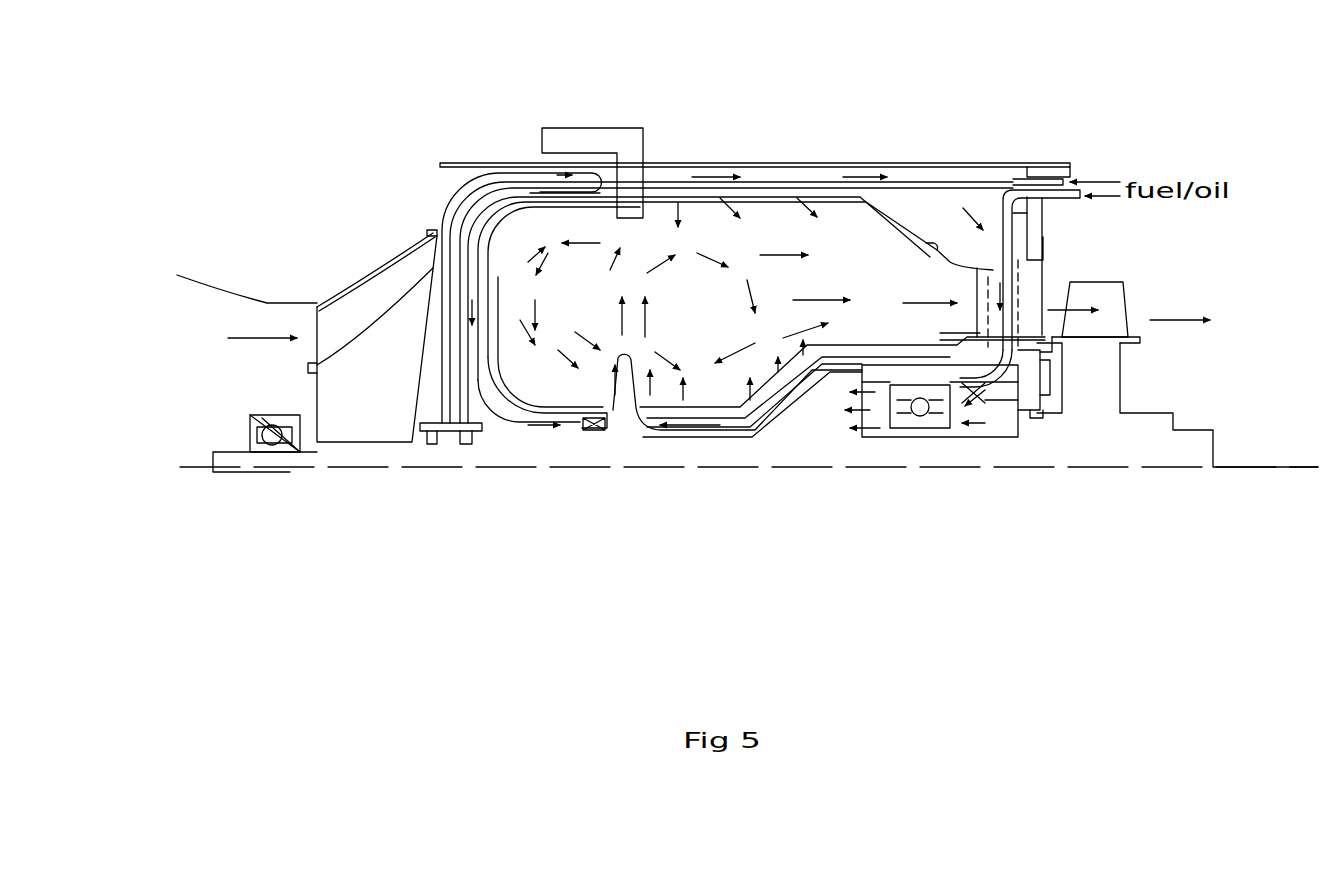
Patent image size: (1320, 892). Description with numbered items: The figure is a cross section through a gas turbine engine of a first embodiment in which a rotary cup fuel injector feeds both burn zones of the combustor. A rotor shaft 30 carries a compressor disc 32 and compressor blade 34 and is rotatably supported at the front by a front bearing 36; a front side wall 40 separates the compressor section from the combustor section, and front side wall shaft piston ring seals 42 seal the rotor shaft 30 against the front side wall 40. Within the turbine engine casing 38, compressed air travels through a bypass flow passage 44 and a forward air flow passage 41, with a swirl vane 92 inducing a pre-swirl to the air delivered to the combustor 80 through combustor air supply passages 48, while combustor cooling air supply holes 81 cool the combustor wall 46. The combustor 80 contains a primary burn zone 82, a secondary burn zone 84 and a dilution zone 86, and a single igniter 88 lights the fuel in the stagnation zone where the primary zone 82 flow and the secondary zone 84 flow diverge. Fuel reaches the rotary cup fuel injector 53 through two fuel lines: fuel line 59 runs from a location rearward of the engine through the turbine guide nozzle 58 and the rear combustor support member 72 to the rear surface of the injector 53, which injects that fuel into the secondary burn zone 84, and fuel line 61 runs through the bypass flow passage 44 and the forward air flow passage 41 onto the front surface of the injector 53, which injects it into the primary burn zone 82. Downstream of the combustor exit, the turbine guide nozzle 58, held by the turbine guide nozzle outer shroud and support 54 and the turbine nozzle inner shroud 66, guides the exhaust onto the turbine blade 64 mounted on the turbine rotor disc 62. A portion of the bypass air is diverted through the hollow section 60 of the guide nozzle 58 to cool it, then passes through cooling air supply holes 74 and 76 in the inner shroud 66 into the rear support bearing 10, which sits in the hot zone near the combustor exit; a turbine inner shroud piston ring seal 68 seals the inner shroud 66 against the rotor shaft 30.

The rear support bearing 10 is at (916, 428).
The rotor shaft 30 is at (826, 465).
The compressor disc 32 is at (318, 383).
The compressor blade 34 is at (317, 303).
The front bearing 36 is at (240, 432).
The turbine engine casing 38 is at (712, 163).
The front side wall 40 is at (500, 290).
The forward air flow passage 41 is at (472, 347).
The front side wall shaft piston ring seals 42 is at (465, 444).
The bypass flow passage 44 is at (778, 173).
The combustor wall 46 is at (838, 195).
The combustor air supply passages 48 is at (677, 212).
The rotary cup fuel injector 53 is at (618, 440).
The turbine guide nozzle outer shroud and support 54 is at (1037, 240).
The turbine guide nozzle 58 is at (1028, 285).
The fuel line 59 is at (1013, 200).
The hollow section of the guide nozzles 60 is at (990, 268).
The fuel line 61 is at (969, 185).
The turbine rotor disc 62 is at (1100, 375).
The turbine blade 64 is at (1107, 293).
The turbine nozzle inner shroud 66 is at (1040, 380).
The turbine inner shroud piston ring seal 68 is at (1037, 418).
The rear combustor support member 72 is at (877, 367).
The cooling air supply hole 74 is at (978, 400).
The cooling air supply hole 76 is at (1016, 420).
The combustor 80 is at (804, 277).
The combustor cooling air supply holes 81 is at (472, 345).
The primary burn zone 82 is at (577, 305).
The secondary burn zone 84 is at (725, 311).
The dilution zone 86 is at (911, 287).
The single igniter 88 is at (603, 142).
The swirl vane 92 is at (580, 440).